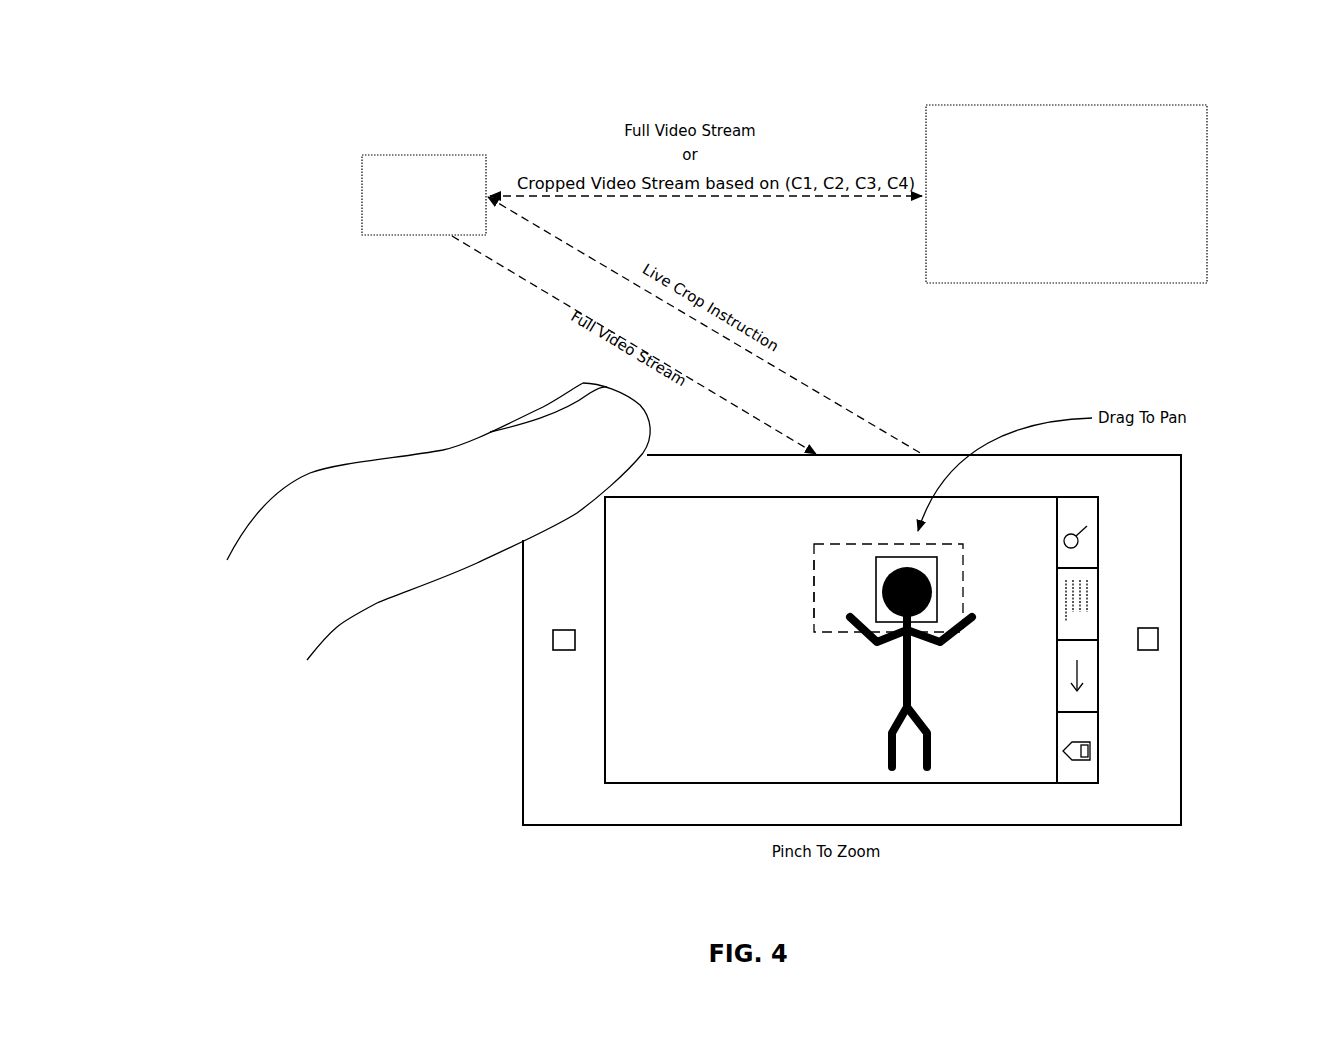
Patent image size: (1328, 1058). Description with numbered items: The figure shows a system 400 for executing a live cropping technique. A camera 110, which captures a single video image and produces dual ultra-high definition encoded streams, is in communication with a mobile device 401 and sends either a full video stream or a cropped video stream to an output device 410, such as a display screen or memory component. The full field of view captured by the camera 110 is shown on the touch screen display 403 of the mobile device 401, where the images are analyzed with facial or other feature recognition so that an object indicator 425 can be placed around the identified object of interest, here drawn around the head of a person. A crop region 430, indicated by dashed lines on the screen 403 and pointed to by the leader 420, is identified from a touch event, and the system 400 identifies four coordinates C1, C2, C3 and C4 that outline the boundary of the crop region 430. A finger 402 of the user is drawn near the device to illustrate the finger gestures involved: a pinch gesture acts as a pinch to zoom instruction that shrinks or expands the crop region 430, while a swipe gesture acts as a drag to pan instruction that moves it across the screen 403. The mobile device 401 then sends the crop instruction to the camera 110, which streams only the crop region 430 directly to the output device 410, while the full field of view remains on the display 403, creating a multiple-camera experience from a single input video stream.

The system 400 is at (1232, 49).
The camera 110 is at (424, 195).
The output device 410 is at (1066, 194).
The mobile device 401 is at (1181, 732).
The user finger 402 is at (340, 627).
The touch screen display 403 is at (1015, 785).
The crop region 420 is at (838, 634).
The object indicator 425 is at (942, 587).
The crop region 430 is at (813, 590).
The coordinate C1 is at (812, 545).
The coordinate C2 is at (812, 634).
The coordinate C3 is at (972, 636).
The coordinate C4 is at (968, 542).